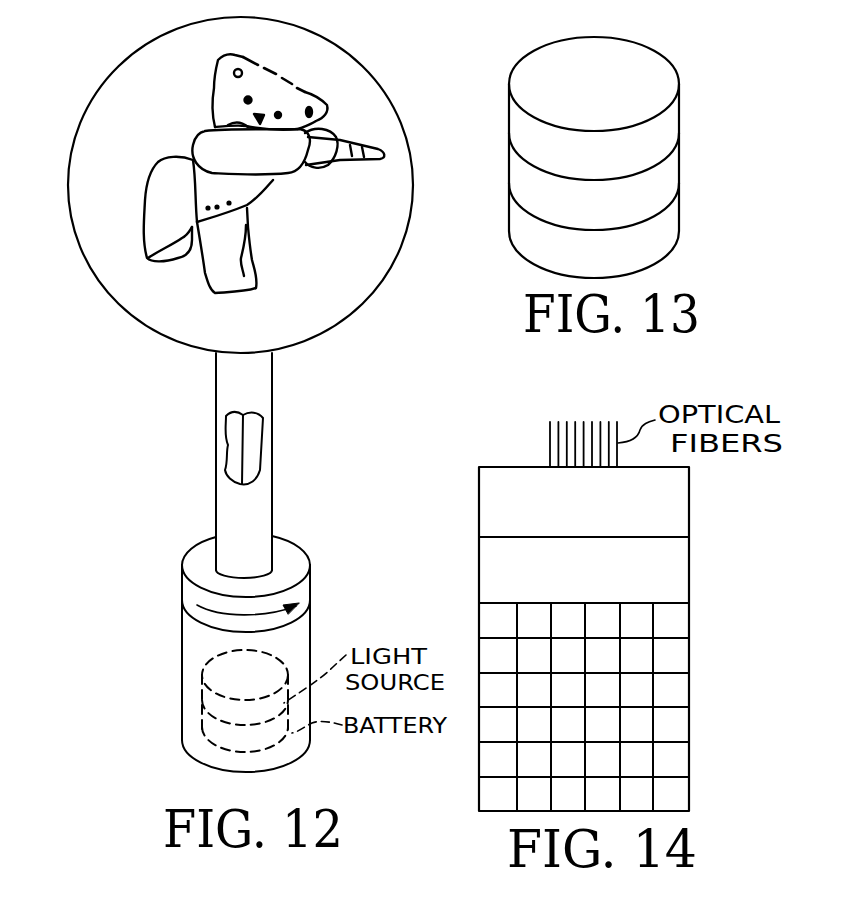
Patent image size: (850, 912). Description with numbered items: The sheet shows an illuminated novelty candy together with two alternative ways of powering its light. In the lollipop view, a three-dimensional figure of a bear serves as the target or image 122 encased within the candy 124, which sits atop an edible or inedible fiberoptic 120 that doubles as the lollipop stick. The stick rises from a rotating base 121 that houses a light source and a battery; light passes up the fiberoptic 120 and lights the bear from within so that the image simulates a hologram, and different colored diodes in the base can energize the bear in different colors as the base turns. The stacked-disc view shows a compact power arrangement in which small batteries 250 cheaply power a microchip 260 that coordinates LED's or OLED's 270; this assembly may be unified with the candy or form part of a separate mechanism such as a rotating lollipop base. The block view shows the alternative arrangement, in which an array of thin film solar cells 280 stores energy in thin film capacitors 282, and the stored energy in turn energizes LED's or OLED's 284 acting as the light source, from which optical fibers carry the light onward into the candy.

In FIG. 12, the fiberoptic source 120 is at (243, 456).
In FIG. 12, the rotating base 121 is at (310, 585).
In FIG. 12, the target or image 122 is at (195, 140).
In FIG. 12, the candy 124 is at (313, 340).
In FIG. 13, the small batteries 250 is at (630, 264).
In FIG. 13, the microchip 260 is at (630, 216).
In FIG. 13, the LED's or OLED's 270 is at (630, 168).
In FIG. 14, the thin film solar cells 280 is at (702, 604).
In FIG. 14, the thin film capacitors 282 is at (690, 578).
In FIG. 14, the LED's or OLED's 284 is at (690, 515).